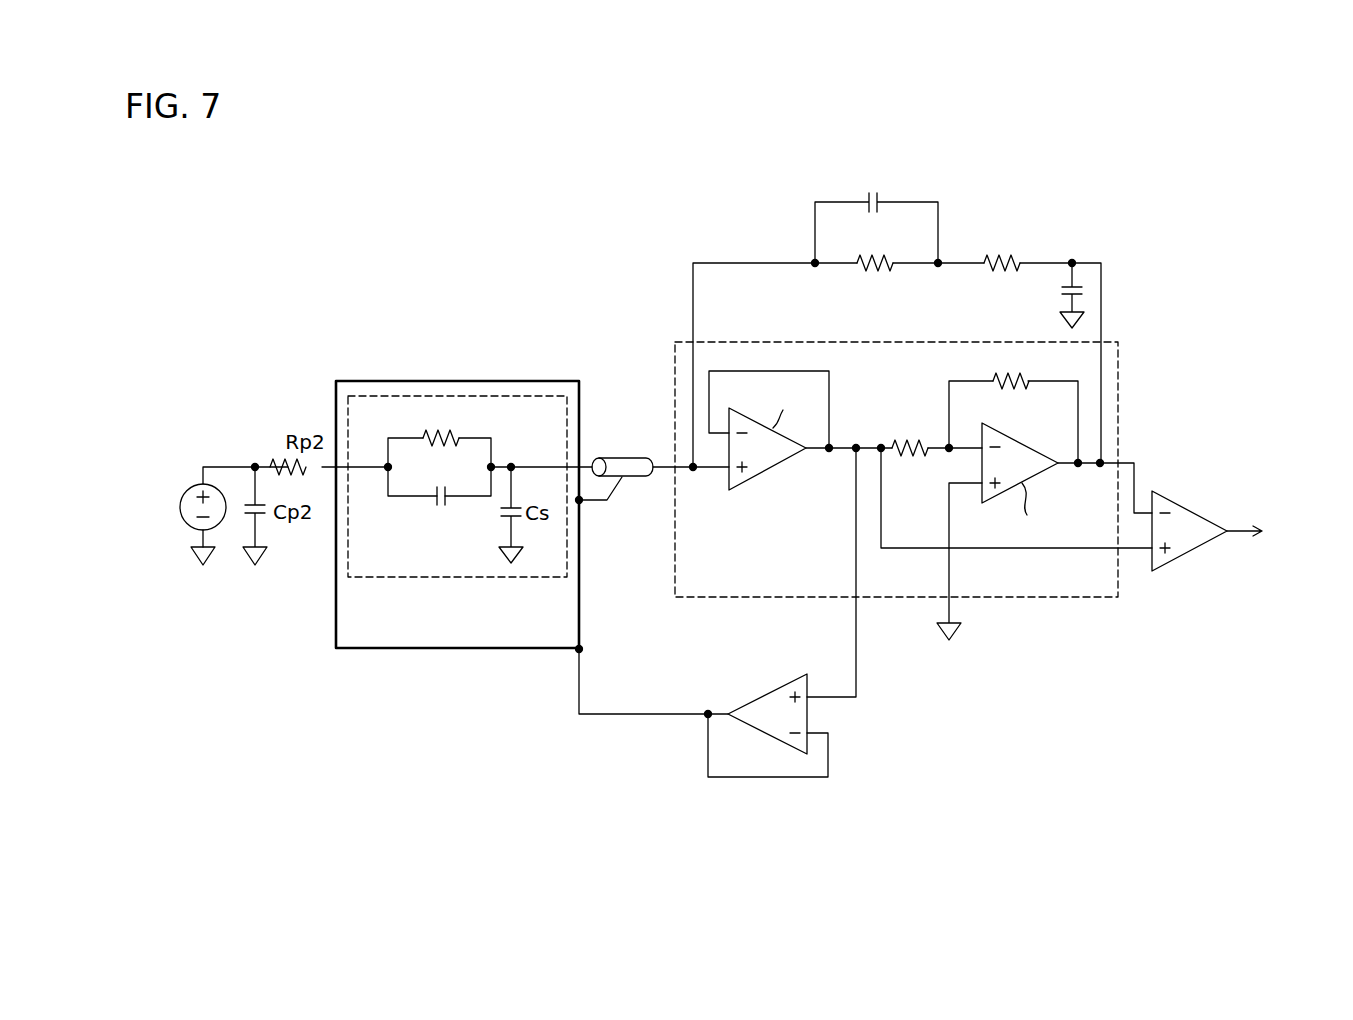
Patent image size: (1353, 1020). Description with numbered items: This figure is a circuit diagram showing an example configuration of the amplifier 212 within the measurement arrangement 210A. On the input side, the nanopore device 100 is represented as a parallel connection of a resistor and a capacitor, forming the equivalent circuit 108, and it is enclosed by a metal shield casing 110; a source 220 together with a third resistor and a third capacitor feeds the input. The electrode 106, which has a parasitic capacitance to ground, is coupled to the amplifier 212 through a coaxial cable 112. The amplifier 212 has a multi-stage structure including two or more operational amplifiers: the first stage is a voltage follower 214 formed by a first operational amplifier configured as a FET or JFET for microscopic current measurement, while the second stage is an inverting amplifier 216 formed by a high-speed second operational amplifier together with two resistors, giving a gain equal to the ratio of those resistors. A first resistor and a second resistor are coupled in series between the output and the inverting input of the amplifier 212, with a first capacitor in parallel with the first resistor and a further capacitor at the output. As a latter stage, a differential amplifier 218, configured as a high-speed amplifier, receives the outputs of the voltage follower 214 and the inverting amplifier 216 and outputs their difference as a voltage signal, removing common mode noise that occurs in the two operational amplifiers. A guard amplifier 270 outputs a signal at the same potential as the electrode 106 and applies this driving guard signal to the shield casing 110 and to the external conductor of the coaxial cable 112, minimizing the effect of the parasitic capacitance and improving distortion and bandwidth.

The voltage source 220 is at (186, 488).
The shield casing 110 is at (453, 381).
The nanopore device 100 is at (452, 578).
The electrode equivalent circuit 108 is at (368, 483).
The electrode 106 is at (549, 459).
The coaxial cable 112 is at (628, 457).
The amplifier circuit 210A is at (977, 403).
The amplifier 212 is at (1055, 600).
The voltage follower 214 is at (783, 487).
The inverting amplifier 216 is at (916, 401).
The differential amplifier 218 is at (1188, 502).
The guard amplifier 270 is at (775, 692).